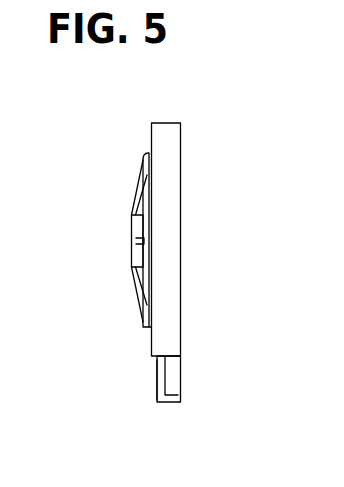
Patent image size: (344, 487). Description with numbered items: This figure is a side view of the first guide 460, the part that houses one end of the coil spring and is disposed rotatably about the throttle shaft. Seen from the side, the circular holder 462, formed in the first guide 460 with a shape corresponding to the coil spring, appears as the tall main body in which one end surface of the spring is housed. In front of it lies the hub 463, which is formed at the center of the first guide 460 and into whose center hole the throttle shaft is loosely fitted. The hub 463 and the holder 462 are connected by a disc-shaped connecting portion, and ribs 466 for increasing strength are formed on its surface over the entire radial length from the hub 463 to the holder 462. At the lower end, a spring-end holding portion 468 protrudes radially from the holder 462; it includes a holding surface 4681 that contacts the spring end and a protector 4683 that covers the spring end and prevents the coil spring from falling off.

The first guide 460 is at (181, 149).
The holder 462 is at (177, 194).
The hub 463 is at (132, 250).
The ribs 466 is at (137, 179).
The spring-end holding portion 468 is at (181, 388).
The holding surface 4681 is at (167, 362).
The protector 4683 is at (157, 381).